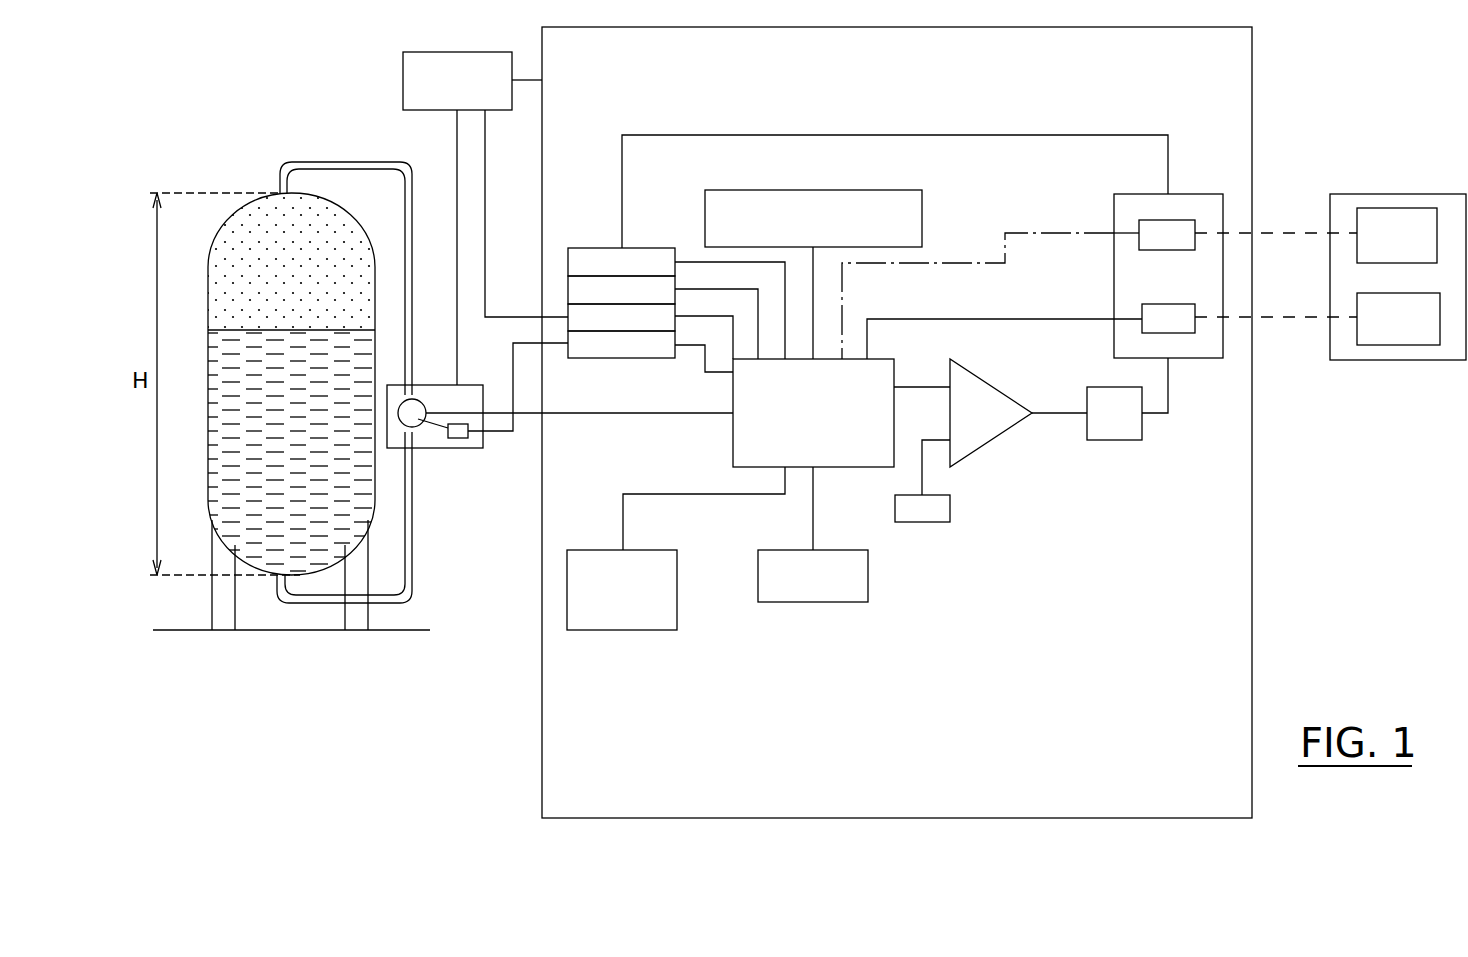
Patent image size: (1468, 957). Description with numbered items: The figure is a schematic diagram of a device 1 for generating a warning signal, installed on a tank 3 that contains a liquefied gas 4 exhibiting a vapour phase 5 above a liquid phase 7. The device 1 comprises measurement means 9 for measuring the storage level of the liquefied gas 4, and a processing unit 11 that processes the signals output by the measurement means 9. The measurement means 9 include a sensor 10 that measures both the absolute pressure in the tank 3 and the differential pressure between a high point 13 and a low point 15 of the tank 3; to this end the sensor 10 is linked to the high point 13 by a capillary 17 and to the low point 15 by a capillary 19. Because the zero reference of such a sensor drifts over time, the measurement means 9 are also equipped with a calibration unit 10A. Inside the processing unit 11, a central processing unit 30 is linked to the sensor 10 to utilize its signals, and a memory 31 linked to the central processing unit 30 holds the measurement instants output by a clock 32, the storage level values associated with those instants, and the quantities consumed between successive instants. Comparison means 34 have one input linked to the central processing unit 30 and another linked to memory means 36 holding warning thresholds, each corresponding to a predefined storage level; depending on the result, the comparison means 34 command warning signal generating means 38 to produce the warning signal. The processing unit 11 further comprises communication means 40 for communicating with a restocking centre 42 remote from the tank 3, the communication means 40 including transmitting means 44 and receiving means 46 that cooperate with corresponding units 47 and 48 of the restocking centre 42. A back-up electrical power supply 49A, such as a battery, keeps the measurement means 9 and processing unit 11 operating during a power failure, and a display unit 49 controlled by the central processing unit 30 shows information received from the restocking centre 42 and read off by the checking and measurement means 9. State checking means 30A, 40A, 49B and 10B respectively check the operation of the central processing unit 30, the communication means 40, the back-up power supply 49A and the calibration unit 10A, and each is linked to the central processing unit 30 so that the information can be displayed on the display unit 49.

The device 1 is at (418, 737).
The tank 3 is at (208, 310).
The liquefied gas 4 is at (285, 350).
The vapour phase 5 is at (240, 257).
The liquid phase 7 is at (285, 450).
The measurement means 9 is at (421, 381).
The sensor 10 is at (420, 425).
The calibration unit 10A is at (460, 438).
The calibration unit checking means 10B is at (621, 345).
The processing unit 11 is at (777, 818).
The high point 13 is at (282, 190).
The low point 15 is at (278, 578).
The capillary 17 is at (405, 232).
The capillary 19 is at (412, 505).
The central processing unit 30 is at (813, 413).
The central processing unit checking means 30A is at (621, 290).
The memory 31 is at (786, 210).
The clock 32 is at (780, 602).
The comparison means 34 is at (985, 385).
The memory means 36 is at (940, 522).
The warning signal generating means 38 is at (1142, 435).
The communication means 40 is at (1192, 358).
The communication means checking means 40A is at (621, 262).
The restocking centre 42 is at (1453, 360).
The transmitting means 44 is at (1168, 318).
The receiving means 46 is at (1167, 235).
The restocking centre unit 47 is at (1398, 319).
The restocking centre unit 48 is at (1397, 235).
The display unit 49 is at (605, 630).
The back-up electrical power supply 49A is at (490, 93).
The power supply checking means 49B is at (621, 318).